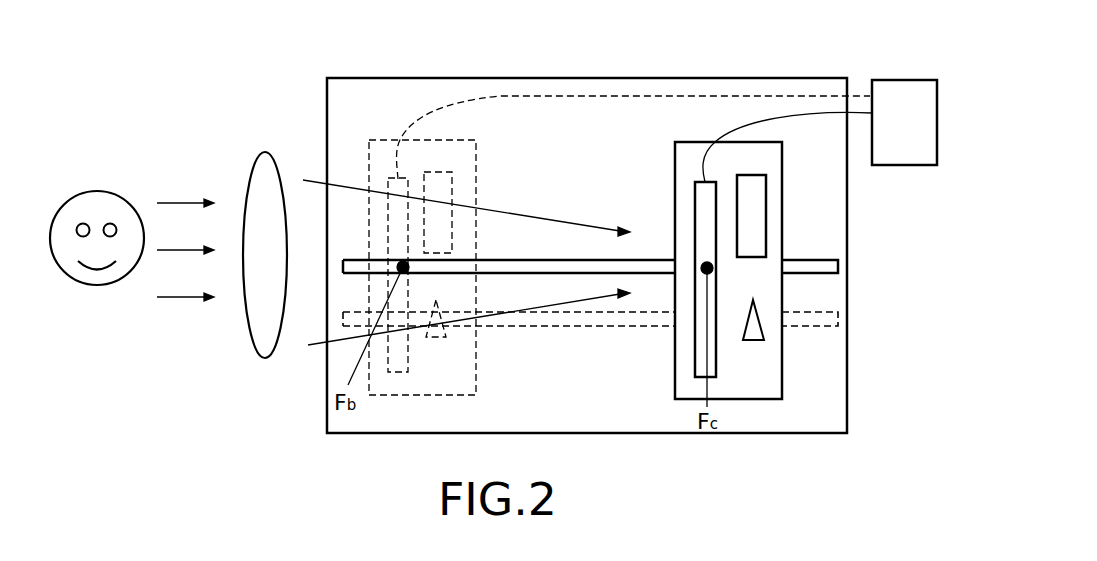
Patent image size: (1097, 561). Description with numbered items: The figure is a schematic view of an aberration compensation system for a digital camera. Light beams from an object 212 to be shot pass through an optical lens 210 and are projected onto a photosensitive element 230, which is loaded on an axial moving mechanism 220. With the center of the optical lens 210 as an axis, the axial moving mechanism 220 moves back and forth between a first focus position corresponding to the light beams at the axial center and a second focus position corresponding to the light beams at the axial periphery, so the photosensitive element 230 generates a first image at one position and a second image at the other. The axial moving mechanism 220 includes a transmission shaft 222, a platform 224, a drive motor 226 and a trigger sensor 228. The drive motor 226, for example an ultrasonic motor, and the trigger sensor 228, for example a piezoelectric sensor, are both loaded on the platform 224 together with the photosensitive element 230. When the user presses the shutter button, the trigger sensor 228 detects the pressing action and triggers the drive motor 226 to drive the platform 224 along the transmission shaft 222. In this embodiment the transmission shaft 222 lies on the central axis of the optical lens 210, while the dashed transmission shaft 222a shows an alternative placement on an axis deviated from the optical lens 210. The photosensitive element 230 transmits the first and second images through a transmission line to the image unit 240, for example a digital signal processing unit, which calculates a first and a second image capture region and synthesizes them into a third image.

The optical lens 210 is at (262, 358).
The object 212 is at (88, 285).
The axial moving mechanism 220 is at (795, 433).
The transmission shaft 222 is at (838, 267).
The transmission shaft 222a is at (838, 319).
The platform 224 is at (745, 399).
The drive motor 226 is at (757, 341).
The trigger sensor 228 is at (766, 212).
The photosensitive element 230 is at (695, 350).
The image unit 240 is at (902, 80).